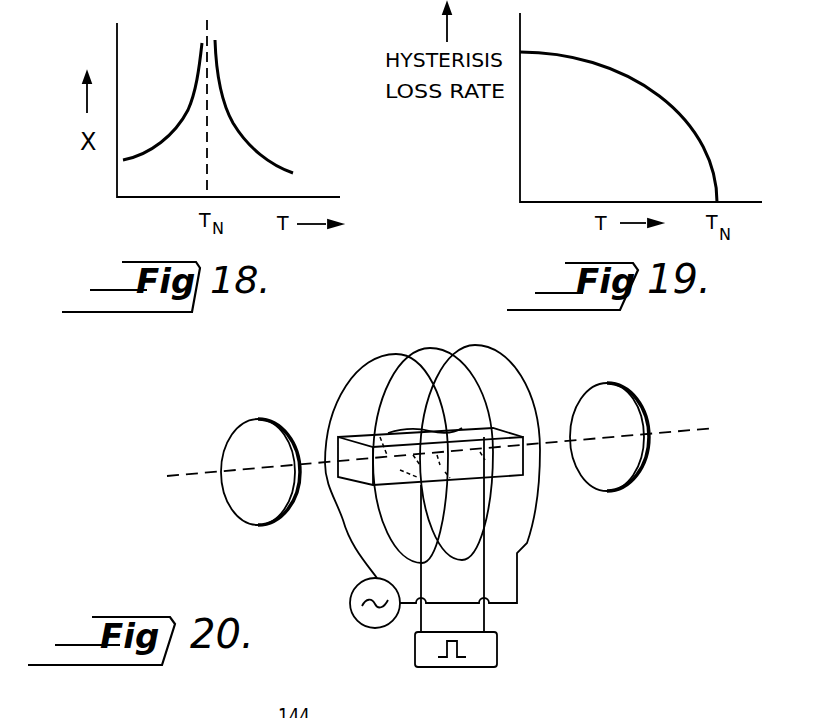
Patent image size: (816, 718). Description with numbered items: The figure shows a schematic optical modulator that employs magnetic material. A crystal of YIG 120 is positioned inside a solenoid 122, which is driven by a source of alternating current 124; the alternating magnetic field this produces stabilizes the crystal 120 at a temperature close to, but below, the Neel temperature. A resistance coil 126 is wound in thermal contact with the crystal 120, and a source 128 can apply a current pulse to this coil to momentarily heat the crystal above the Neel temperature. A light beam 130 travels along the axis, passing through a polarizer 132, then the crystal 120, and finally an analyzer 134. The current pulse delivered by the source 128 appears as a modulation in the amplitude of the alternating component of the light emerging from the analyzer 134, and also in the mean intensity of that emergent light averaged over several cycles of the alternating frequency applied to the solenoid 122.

The crystal of YIG 120 is at (360, 474).
The solenoid 122 is at (420, 343).
The source of alternating current 124 is at (349, 606).
The resistance coil 126 is at (388, 433).
The source 128 is at (498, 648).
The light beam 130 is at (168, 476).
The polarizer 132 is at (250, 512).
The analyzer 134 is at (602, 398).